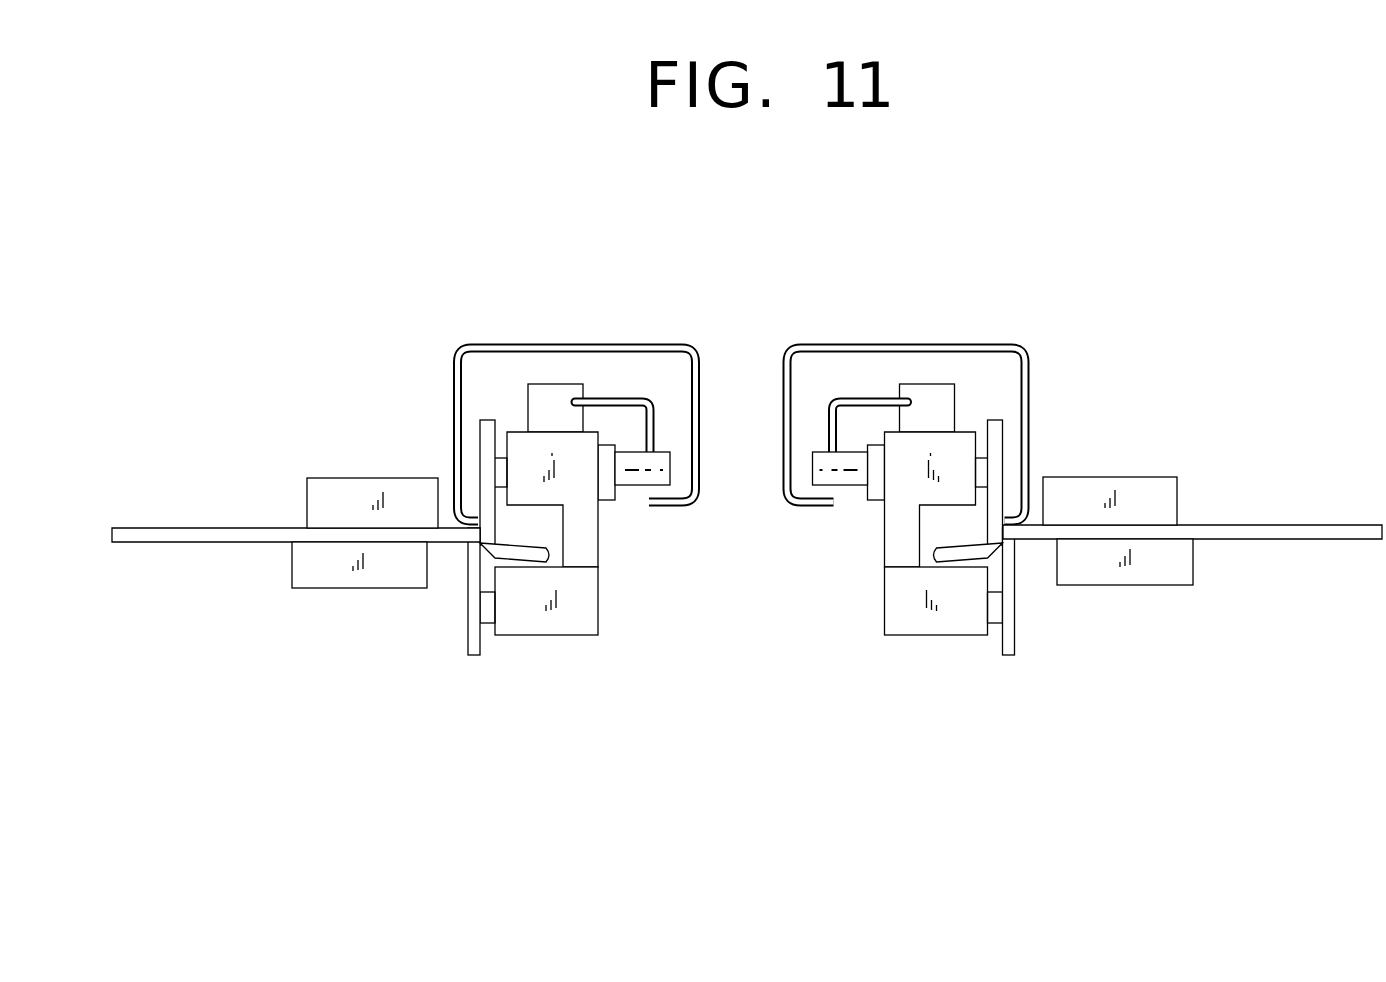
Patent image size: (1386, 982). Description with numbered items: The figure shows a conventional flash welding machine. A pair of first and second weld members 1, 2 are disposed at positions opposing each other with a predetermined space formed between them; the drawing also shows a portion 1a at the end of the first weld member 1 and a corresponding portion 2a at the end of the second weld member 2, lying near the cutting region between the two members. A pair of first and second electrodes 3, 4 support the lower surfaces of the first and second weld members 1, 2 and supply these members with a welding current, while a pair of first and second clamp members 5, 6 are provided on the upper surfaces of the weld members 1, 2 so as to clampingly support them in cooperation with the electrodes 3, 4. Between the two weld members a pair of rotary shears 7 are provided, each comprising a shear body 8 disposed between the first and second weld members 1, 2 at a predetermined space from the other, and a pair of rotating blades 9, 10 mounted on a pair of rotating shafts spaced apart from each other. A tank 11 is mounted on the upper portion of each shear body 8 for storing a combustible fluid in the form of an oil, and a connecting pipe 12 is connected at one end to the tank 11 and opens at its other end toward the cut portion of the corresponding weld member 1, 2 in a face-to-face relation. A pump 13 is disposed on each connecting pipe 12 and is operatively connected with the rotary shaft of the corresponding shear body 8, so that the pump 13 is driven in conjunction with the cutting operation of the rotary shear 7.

The first weld member 1 is at (1293, 540).
The tab of first plate 1a is at (931, 552).
The second weld member 2 is at (187, 542).
The tab of second plate 2a is at (553, 553).
The first electrode 3 is at (1142, 585).
The second electrode 4 is at (343, 588).
The first clamp member 5 is at (1162, 477).
The second clamp member 6 is at (320, 478).
The rotary shear 7 is at (561, 637).
The shear body 8 is at (594, 512).
The rotating blade 9 is at (483, 421).
The rotating blade 10 is at (471, 657).
The tank 11 is at (560, 384).
The connecting pipe 12 is at (455, 440).
The pump 13 is at (669, 462).